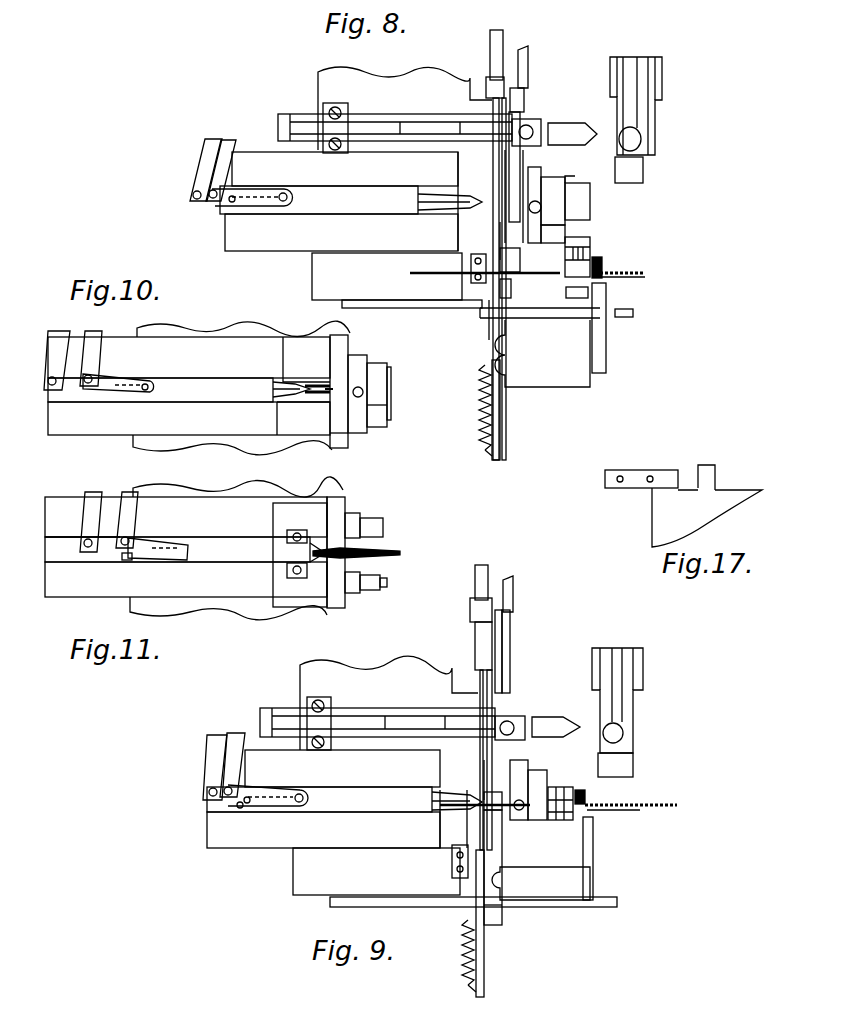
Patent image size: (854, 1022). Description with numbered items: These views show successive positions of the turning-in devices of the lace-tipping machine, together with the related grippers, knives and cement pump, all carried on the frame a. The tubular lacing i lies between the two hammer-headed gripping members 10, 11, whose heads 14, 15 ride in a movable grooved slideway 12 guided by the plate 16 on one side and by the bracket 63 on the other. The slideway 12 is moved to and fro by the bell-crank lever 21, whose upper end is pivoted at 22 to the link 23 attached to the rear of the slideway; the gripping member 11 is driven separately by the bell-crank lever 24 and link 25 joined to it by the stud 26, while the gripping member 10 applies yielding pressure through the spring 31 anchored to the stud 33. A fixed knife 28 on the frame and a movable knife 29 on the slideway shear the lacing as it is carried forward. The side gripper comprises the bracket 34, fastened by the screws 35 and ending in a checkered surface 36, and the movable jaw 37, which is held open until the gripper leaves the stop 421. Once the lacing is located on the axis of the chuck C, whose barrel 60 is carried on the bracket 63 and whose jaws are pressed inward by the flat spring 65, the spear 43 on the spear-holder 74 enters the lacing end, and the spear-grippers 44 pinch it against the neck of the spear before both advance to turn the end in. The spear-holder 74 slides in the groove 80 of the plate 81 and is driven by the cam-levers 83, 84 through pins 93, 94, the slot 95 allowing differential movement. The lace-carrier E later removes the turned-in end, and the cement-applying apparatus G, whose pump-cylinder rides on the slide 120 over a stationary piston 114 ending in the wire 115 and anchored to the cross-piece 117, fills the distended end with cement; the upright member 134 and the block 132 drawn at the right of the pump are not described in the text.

In FIG. 8, the frame a is at (333, 274).
In FIG. 10, the frame a is at (213, 333).
In FIG. 11, the frame a is at (262, 500).
In FIG. 17, the frame a is at (742, 501).
In FIG. 9, the frame a is at (378, 672).
In FIG. 8, the gripping member 10 is at (506, 287).
In FIG. 9, the gripping member 10 is at (492, 890).
In FIG. 8, the gripping member 11 is at (500, 240).
In FIG. 9, the gripping member 11 is at (480, 770).
In FIG. 8, the slideway 12 is at (490, 365).
In FIG. 9, the slideway 12 is at (488, 928).
In FIG. 8, the head of gripping member 14 is at (478, 280).
In FIG. 9, the head of gripping member 14 is at (478, 813).
In FIG. 8, the head of gripping member 15 is at (506, 268).
In FIG. 9, the head of gripping member 15 is at (480, 791).
In FIG. 8, the plate 16 is at (486, 191).
In FIG. 10, the plate 16 is at (322, 435).
In FIG. 11, the plate 16 is at (304, 598).
In FIG. 8, the bell-crank lever 21 is at (485, 48).
In FIG. 9, the bell-crank lever 21 is at (471, 579).
In FIG. 8, the pivot 22 is at (488, 82).
In FIG. 9, the pivot 22 is at (463, 613).
In FIG. 8, the link 23 is at (494, 113).
In FIG. 9, the link 23 is at (471, 645).
In FIG. 8, the bell-crank lever 24 is at (537, 73).
In FIG. 9, the bell-crank lever 24 is at (517, 595).
In FIG. 8, the link 25 is at (516, 123).
In FIG. 9, the link 25 is at (500, 643).
In FIG. 8, the stud 26 is at (532, 101).
In FIG. 9, the stud 26 is at (512, 677).
In FIG. 8, the fixed knife 28 is at (456, 285).
In FIG. 17, the fixed knife 28 is at (719, 468).
In FIG. 9, the fixed knife 28 is at (455, 855).
In FIG. 8, the movable knife 29 is at (483, 339).
In FIG. 17, the movable knife 29 is at (677, 465).
In FIG. 9, the movable knife 29 is at (455, 833).
In FIG. 8, the spring 31 is at (477, 436).
In FIG. 9, the spring 31 is at (471, 974).
In FIG. 8, the stud 33 is at (483, 383).
In FIG. 9, the stud 33 is at (468, 921).
In FIG. 8, the bracket 34 is at (546, 335).
In FIG. 9, the bracket 34 is at (569, 867).
In FIG. 9, the screws 35 is at (495, 906).
In FIG. 8, the checkered surface 36 is at (612, 280).
In FIG. 9, the checkered surface 36 is at (585, 812).
In FIG. 8, the movable jaw 37 is at (607, 259).
In FIG. 9, the movable jaw 37 is at (585, 783).
In FIG. 8, the spear 43 is at (428, 202).
In FIG. 10, the spear 43 is at (281, 381).
In FIG. 9, the spear 43 is at (436, 793).
In FIG. 10, the spear-grippers 44 is at (302, 383).
In FIG. 8, the barrel 60 is at (581, 296).
In FIG. 10, the barrel 60 is at (380, 408).
In FIG. 8, the bracket 63 is at (524, 198).
In FIG. 10, the bracket 63 is at (345, 440).
In FIG. 11, the bracket 63 is at (347, 513).
In FIG. 9, the bracket 63 is at (507, 756).
In FIG. 8, the flat spring 65 is at (564, 237).
In FIG. 9, the flat spring 65 is at (520, 836).
In FIG. 8, the spear-holder 74 is at (373, 193).
In FIG. 10, the spear-holder 74 is at (220, 384).
In FIG. 11, the spear-holder 74 is at (252, 544).
In FIG. 9, the spear-holder 74 is at (361, 791).
In FIG. 11, the groove 80 is at (68, 554).
In FIG. 8, the plate 81 is at (264, 163).
In FIG. 11, the plate 81 is at (59, 500).
In FIG. 8, the cam-lever 83 is at (205, 152).
In FIG. 10, the cam-lever 83 is at (58, 338).
In FIG. 11, the cam-lever 83 is at (102, 489).
In FIG. 9, the cam-lever 83 is at (219, 731).
In FIG. 8, the cam-lever 84 is at (232, 141).
In FIG. 10, the cam-lever 84 is at (97, 339).
In FIG. 11, the cam-lever 84 is at (135, 490).
In FIG. 9, the cam-lever 84 is at (243, 733).
In FIG. 10, the pin 93 is at (87, 382).
In FIG. 11, the pin 93 is at (124, 556).
In FIG. 9, the pin 93 is at (240, 807).
In FIG. 8, the pin 94 is at (262, 207).
In FIG. 11, the pin 94 is at (180, 561).
In FIG. 9, the pin 94 is at (280, 805).
In FIG. 8, the slot 95 is at (222, 206).
In FIG. 9, the slot 95 is at (298, 806).
In FIG. 8, the piston 114 is at (417, 126).
In FIG. 9, the piston 114 is at (407, 724).
In FIG. 8, the wire 115 is at (603, 133).
In FIG. 8, the cross-piece 117 is at (349, 123).
In FIG. 9, the cross-piece 117 is at (329, 717).
In FIG. 8, the slide 120 is at (307, 118).
In FIG. 9, the slide 120 is at (294, 713).
In FIG. 8, the block 132 is at (652, 171).
In FIG. 9, the block 132 is at (627, 775).
In FIG. 8, the upright 134 is at (649, 128).
In FIG. 9, the upright 134 is at (619, 715).
In FIG. 8, the stop 421 is at (624, 316).
In FIG. 9, the stop 421 is at (609, 918).
In FIG. 8, the chuck C is at (557, 204).
In FIG. 10, the chuck C is at (382, 390).
In FIG. 11, the chuck C is at (387, 581).
In FIG. 9, the chuck C is at (545, 785).
In FIG. 8, the lace-carrier E is at (590, 214).
In FIG. 9, the cement-applying apparatus G is at (534, 721).
In FIG. 8, the lacing i is at (632, 273).
In FIG. 10, the lacing i is at (338, 382).
In FIG. 11, the lacing i is at (381, 546).
In FIG. 9, the lacing i is at (640, 803).